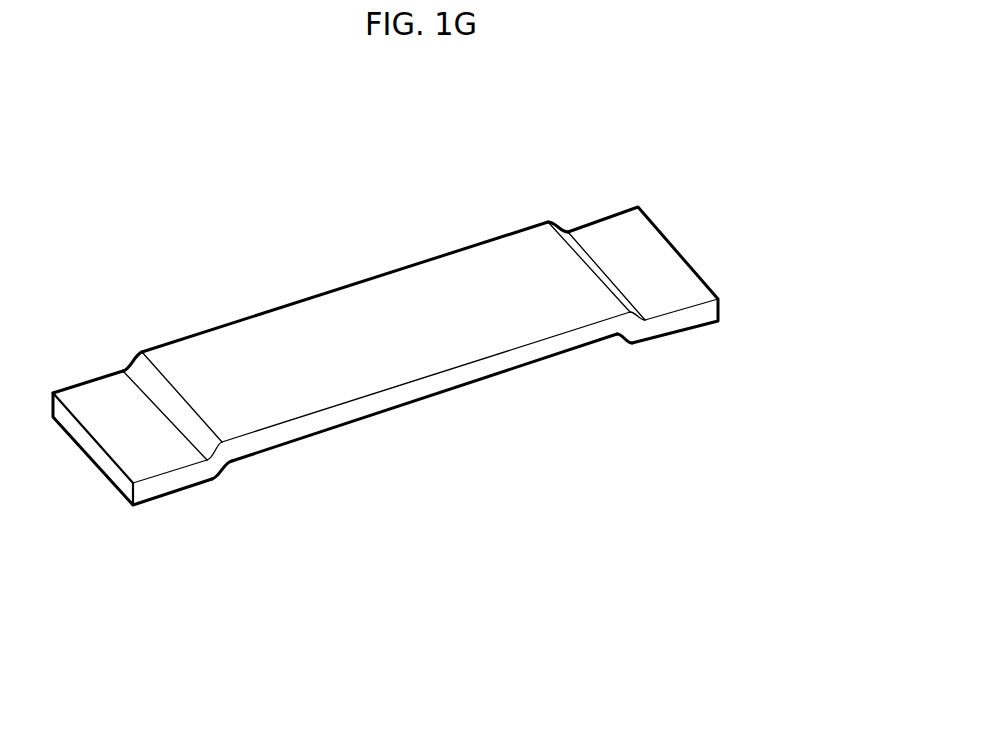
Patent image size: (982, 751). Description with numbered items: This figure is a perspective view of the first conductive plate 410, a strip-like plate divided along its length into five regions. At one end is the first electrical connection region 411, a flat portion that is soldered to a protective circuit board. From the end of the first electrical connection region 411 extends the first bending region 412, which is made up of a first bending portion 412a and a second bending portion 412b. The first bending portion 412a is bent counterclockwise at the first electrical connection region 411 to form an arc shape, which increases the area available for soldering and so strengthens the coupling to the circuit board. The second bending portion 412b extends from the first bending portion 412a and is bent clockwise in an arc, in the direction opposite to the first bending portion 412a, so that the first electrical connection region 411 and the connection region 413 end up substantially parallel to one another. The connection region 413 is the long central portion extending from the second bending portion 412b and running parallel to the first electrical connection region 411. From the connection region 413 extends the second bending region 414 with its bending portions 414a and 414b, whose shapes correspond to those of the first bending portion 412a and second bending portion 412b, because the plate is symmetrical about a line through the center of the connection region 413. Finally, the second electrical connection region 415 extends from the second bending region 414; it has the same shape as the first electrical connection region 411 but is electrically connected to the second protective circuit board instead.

The first conductive plate 410 is at (334, 201).
The first electrical connection region 411 is at (162, 490).
The first bending region 412 is at (331, 546).
The first bending portion 412a is at (218, 482).
The second bending portion 412b is at (230, 462).
The connection region 413 is at (415, 390).
The second bending region 414 is at (661, 444).
The bending portion 414a is at (620, 337).
The bending portion 414b is at (633, 345).
The second electrical connection region 415 is at (695, 322).